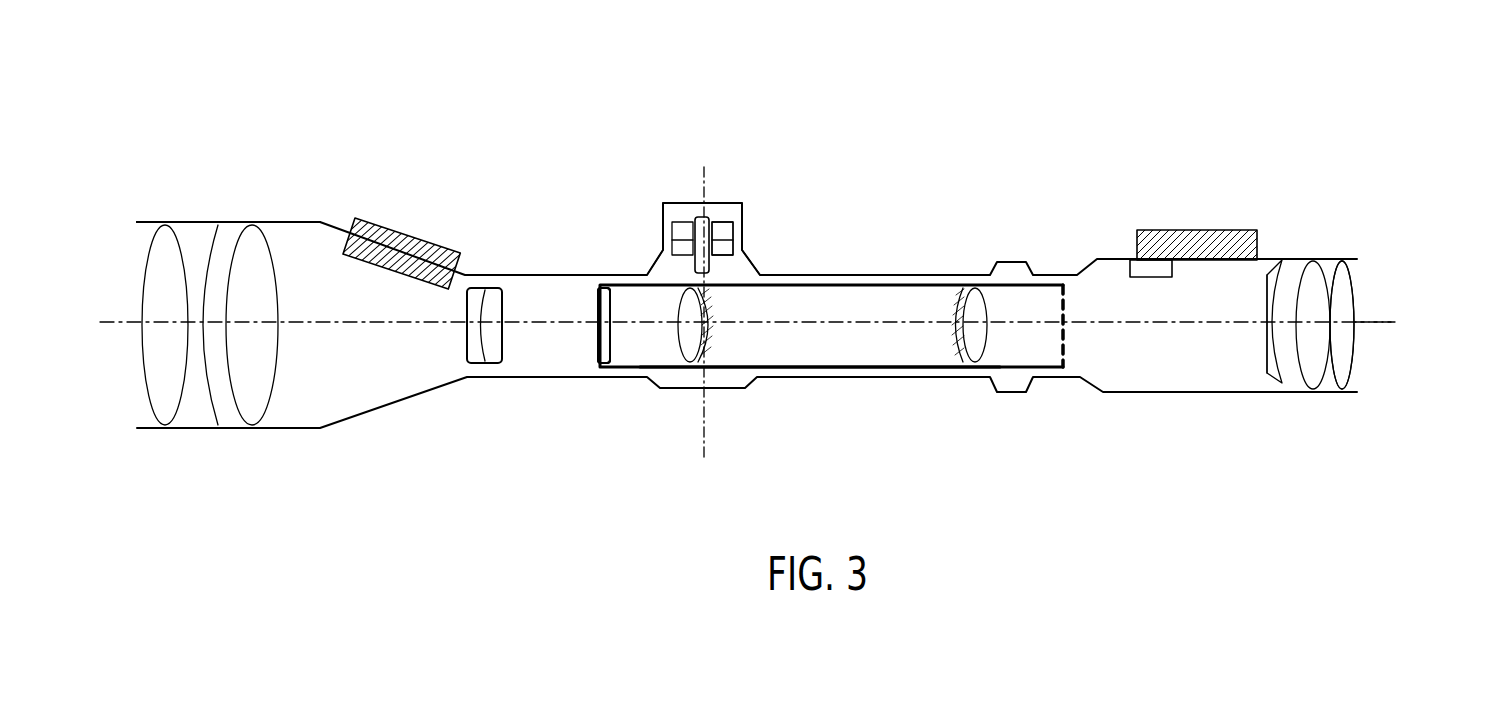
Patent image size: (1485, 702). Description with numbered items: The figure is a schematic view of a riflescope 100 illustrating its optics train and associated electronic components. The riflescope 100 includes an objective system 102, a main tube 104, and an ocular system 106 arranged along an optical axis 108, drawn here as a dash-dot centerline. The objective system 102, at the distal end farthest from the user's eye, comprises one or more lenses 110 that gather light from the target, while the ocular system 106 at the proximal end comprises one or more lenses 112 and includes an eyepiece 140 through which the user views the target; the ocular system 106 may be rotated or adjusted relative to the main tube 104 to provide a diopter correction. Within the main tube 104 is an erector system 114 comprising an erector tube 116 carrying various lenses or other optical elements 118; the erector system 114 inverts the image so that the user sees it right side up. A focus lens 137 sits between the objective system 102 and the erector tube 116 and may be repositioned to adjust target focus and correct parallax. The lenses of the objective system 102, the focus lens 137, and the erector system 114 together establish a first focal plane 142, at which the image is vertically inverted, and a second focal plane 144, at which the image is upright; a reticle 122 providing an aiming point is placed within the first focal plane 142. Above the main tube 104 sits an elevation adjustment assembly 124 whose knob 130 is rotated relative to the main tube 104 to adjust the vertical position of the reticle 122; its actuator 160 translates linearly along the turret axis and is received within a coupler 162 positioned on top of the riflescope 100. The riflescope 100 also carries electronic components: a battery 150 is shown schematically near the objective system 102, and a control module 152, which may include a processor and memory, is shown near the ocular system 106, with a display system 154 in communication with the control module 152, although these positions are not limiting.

The riflescope 100 is at (845, 140).
The objective system 102 is at (255, 453).
The main tube 104 is at (872, 275).
The ocular system 106 is at (1362, 418).
The optical axis 108 is at (1377, 322).
The lenses 110 is at (282, 257).
The lenses 112 is at (1255, 350).
The erector system 114 is at (737, 375).
The erector tube 116 is at (807, 367).
The optical elements 118 is at (673, 360).
The reticle 122 is at (598, 312).
The elevation adjustment assembly 124 is at (731, 190).
The knob 130 is at (662, 223).
The focus lens 137 is at (493, 362).
The eyepiece 140 is at (1358, 336).
The first focal plane 142 is at (598, 312).
The second focal plane 144 is at (1067, 350).
The battery 150 is at (400, 230).
The control module 152 is at (1180, 228).
The display system 154 is at (1110, 262).
The actuator 160 is at (730, 222).
The coupler 162 is at (733, 255).